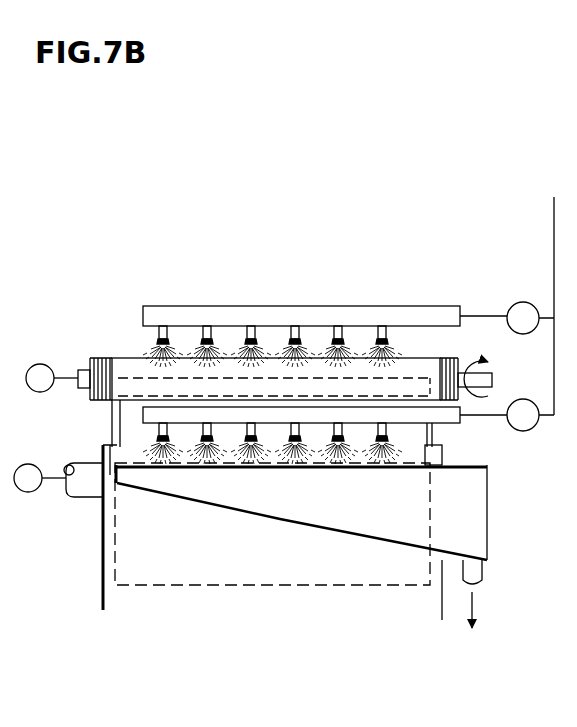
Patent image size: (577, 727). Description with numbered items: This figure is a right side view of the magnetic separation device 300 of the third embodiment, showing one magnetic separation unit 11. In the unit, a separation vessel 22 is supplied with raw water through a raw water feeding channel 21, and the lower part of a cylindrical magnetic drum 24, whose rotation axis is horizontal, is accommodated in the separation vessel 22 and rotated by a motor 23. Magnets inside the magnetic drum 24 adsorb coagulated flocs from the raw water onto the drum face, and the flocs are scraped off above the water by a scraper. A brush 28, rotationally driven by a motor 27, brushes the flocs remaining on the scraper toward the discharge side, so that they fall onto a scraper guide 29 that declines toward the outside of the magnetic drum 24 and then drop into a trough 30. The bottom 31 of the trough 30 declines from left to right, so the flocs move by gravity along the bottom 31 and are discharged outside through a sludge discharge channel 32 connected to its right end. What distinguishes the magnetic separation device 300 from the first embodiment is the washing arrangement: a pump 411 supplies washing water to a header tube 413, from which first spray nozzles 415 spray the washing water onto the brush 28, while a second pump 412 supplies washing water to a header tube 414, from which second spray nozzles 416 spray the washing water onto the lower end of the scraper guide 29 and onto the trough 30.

The magnetic separation device 300 is at (441, 180).
The magnetic separation unit 11 is at (294, 278).
The header tube 413 is at (333, 320).
The pump 411 is at (518, 302).
The first spray nozzles 415 is at (207, 326).
The brush 28 is at (116, 357).
The motor 27 is at (42, 362).
The magnetic drum 24 is at (143, 418).
The header tube 414 is at (448, 414).
The pump 412 is at (526, 432).
The second spray nozzles 416 is at (200, 437).
The separation vessel 22 is at (448, 456).
The scraper guide 29 is at (425, 464).
The trough 30 is at (487, 540).
The sludge discharge channel 32 is at (482, 578).
The bottom 31 is at (280, 522).
The raw water feeding channel 21 is at (103, 563).
The motor 23 is at (30, 492).